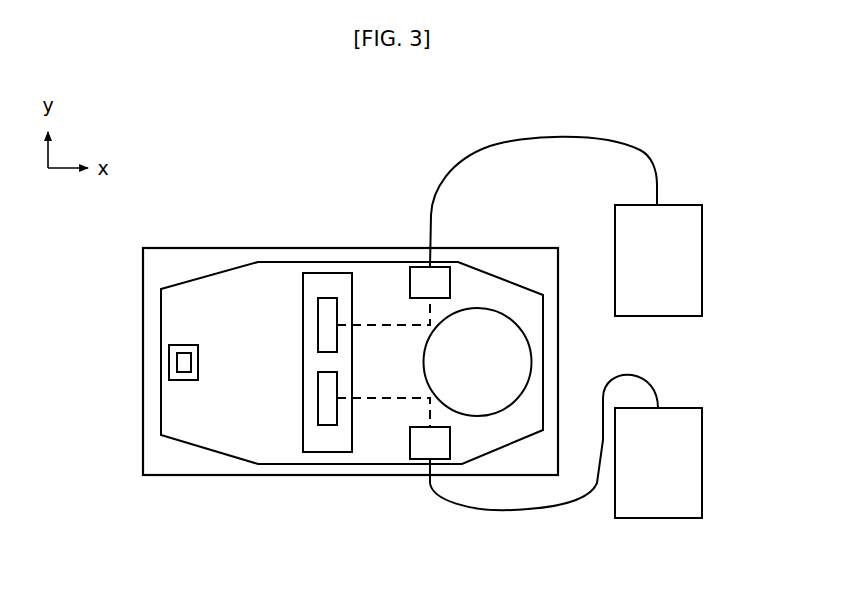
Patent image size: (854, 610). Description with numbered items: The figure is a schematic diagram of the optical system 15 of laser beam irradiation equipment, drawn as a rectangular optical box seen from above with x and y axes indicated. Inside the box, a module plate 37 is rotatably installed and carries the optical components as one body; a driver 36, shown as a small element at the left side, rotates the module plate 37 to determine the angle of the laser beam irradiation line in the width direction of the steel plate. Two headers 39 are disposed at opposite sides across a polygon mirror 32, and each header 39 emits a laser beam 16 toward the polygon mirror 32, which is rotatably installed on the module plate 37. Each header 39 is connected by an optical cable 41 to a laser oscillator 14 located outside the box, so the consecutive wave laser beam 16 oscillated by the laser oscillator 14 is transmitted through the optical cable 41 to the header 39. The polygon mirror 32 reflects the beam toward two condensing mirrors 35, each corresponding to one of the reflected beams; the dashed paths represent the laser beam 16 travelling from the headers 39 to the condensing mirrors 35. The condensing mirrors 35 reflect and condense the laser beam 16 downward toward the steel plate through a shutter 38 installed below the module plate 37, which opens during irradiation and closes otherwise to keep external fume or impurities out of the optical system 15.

The laser oscillator 14 is at (702, 261).
The optical system 15 is at (136, 250).
The laser beam 16 is at (373, 400).
The polygon mirror 32 is at (520, 357).
The condensing mirror 35 is at (318, 330).
The driver 36 is at (169, 358).
The module plate 37 is at (188, 432).
The shutter 38 is at (303, 303).
The header 39 is at (410, 277).
The optical cable 41 is at (461, 164).